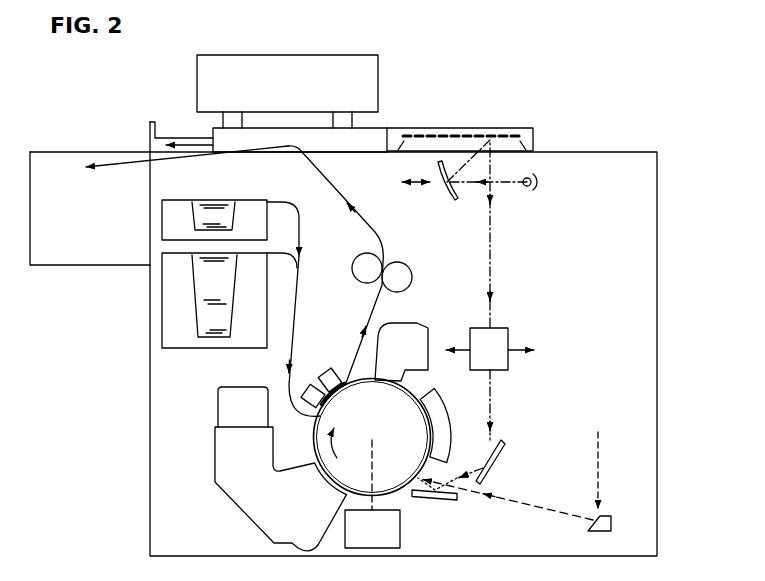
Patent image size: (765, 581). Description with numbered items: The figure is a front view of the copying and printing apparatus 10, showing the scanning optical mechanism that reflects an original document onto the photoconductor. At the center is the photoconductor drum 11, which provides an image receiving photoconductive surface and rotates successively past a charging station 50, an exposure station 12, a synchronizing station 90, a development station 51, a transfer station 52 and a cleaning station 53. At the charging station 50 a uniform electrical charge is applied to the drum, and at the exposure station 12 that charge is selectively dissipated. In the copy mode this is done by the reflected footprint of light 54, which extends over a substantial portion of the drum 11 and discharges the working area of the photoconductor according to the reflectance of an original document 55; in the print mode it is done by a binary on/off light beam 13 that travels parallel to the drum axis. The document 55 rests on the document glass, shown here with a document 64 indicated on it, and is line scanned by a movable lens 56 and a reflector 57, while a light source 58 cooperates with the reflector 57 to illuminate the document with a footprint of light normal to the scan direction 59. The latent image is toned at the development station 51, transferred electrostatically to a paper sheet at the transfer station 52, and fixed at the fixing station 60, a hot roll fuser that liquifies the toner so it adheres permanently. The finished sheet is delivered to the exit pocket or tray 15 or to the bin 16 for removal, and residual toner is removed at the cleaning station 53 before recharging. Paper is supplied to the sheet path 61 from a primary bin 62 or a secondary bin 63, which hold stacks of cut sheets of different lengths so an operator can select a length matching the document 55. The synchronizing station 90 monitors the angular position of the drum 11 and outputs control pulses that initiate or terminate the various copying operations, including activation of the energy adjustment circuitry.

The apparatus 10 is at (660, 272).
The photoconductor drum 11 is at (372, 437).
The exposure station 12 is at (421, 498).
The light beam 13 is at (518, 505).
The exit pocket or tray 15 is at (177, 132).
The bin 16 is at (80, 158).
The charging station 50 is at (439, 417).
The development station 51 is at (289, 518).
The transfer station 52 is at (315, 380).
The cleaning station 53 is at (409, 358).
The reflected footprint of light 54 is at (493, 418).
The original document 55 is at (446, 132).
The movable lens 56 is at (497, 333).
The reflector 57 is at (446, 195).
The light source 58 is at (530, 193).
The scan direction 59 is at (417, 179).
The fixing station 60 is at (379, 252).
The sheet path 61 is at (296, 290).
The primary bin 62 is at (175, 338).
The secondary bin 63 is at (181, 210).
The original document 64 is at (527, 144).
The synchronizing station 90 is at (385, 540).